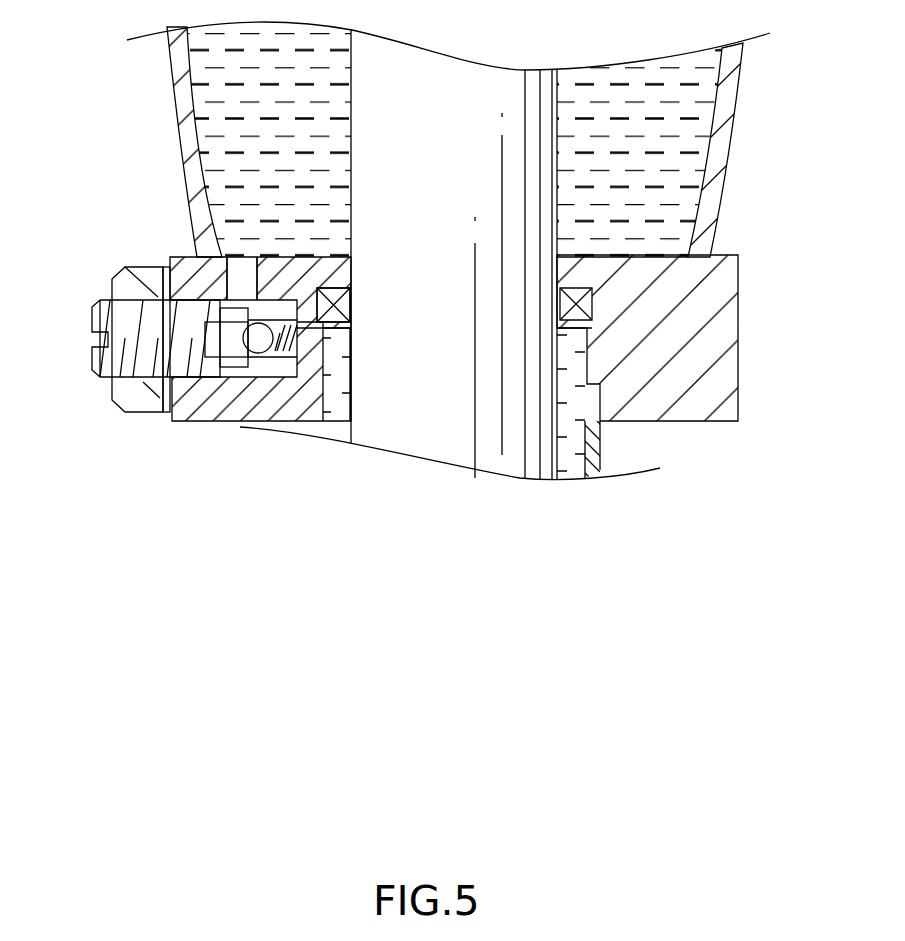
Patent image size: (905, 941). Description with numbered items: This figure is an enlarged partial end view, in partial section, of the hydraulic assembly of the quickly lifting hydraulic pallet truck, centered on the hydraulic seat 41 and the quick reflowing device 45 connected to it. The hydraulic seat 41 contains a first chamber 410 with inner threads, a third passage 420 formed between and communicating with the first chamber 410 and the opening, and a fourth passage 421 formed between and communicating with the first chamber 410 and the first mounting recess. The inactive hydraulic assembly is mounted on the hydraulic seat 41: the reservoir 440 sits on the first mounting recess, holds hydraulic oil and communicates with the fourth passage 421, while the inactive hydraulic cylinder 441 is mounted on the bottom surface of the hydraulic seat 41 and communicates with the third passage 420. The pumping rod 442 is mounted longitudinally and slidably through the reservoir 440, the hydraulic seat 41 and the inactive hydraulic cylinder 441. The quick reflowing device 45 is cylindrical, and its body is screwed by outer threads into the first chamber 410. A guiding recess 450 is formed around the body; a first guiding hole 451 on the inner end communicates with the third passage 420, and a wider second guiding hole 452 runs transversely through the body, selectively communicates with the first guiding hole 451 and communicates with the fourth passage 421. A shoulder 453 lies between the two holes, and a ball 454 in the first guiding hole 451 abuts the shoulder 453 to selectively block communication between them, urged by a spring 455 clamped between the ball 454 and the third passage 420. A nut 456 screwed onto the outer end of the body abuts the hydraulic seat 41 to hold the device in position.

The hydraulic seat 41 is at (722, 290).
The quick reflowing device 45 is at (85, 330).
The first chamber 410 is at (288, 380).
The third passage 420 is at (318, 344).
The fourth passage 421 is at (243, 268).
The reservoir 440 is at (725, 146).
The inactive hydraulic cylinder 441 is at (590, 450).
The pumping rod 442 is at (497, 457).
The guiding recess 450 is at (245, 373).
The first guiding hole 451 is at (318, 346).
The second guiding hole 452 is at (228, 375).
The shoulder 453 is at (250, 337).
The ball 454 is at (262, 354).
The spring 455 is at (297, 338).
The nut 456 is at (112, 403).